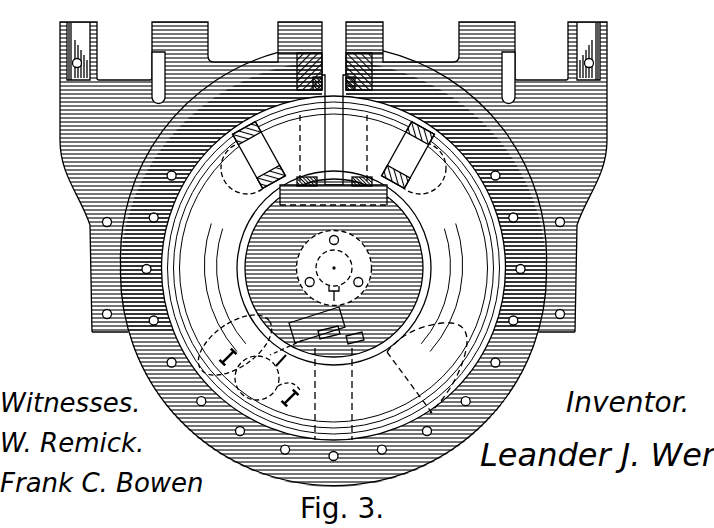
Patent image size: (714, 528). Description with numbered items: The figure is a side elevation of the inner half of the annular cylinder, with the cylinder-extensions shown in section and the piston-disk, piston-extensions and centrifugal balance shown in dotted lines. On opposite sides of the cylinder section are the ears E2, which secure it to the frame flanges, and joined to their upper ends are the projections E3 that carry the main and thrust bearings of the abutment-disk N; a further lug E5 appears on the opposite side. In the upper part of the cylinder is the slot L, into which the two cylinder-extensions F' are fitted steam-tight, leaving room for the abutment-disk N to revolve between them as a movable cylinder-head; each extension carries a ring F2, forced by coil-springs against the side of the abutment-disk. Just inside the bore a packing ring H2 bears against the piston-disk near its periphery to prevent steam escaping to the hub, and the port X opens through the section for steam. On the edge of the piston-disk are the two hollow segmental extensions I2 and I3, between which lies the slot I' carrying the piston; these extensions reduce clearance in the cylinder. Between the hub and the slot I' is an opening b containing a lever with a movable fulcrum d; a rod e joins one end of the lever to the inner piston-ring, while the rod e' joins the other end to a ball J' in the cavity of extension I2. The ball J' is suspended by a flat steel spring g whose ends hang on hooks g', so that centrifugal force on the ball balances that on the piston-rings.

The slot L is at (305, 26).
The cylinder-extensions F' is at (330, 62).
The left frame lug E5 is at (54, 98).
The projections E3 is at (608, 118).
The ears E2 is at (93, 267).
The ring F2 is at (572, 278).
The ring H2 is at (418, 293).
The abutment-disk N is at (259, 155).
The port X is at (408, 155).
The movable fulcrum d is at (313, 327).
The rod e is at (332, 348).
The opening b is at (355, 330).
The slot I' is at (342, 394).
The ball J' is at (257, 378).
The segmental extension I2 is at (235, 342).
The flat steel spring g is at (252, 377).
The hooks g' is at (291, 387).
The rod e' is at (285, 367).
The segmental extension I3 is at (427, 368).